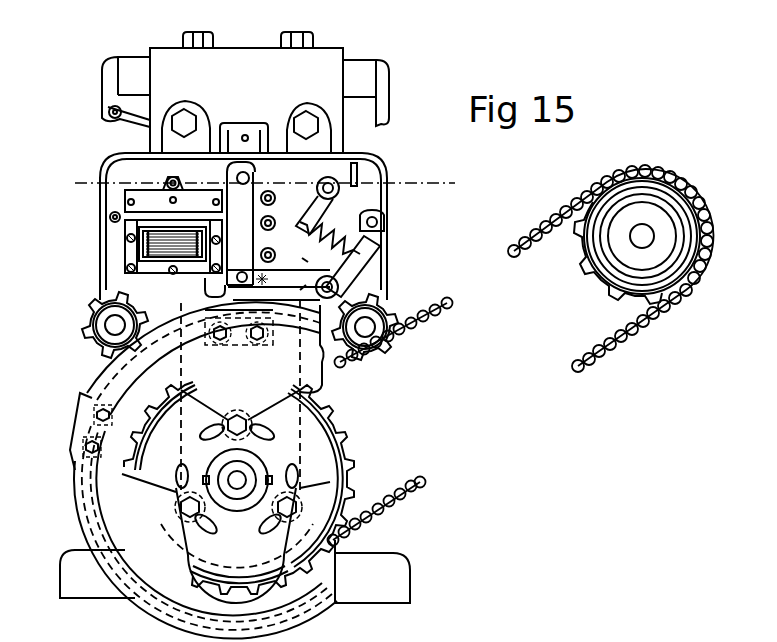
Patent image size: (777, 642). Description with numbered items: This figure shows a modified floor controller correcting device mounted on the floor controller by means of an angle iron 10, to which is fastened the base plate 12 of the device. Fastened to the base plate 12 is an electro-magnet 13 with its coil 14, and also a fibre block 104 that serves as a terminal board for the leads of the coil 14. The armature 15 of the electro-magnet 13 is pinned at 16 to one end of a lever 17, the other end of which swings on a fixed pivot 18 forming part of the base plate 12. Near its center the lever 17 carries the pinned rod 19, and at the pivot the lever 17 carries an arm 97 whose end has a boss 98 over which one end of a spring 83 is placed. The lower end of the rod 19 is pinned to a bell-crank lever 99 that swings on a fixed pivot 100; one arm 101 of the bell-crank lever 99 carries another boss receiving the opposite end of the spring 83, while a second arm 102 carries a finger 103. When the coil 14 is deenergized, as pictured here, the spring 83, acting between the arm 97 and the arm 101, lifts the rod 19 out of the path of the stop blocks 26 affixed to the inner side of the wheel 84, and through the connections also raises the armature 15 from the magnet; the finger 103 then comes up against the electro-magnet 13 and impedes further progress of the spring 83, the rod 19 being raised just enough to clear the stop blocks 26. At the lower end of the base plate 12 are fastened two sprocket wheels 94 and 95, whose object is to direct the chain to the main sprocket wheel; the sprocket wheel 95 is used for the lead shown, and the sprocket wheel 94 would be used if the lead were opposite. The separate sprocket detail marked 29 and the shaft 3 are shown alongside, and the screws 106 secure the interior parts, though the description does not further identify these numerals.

The shaft 3 is at (655, 238).
The angle iron 10 is at (330, 68).
The base plate 12 is at (372, 172).
The electro-magnet 13 is at (130, 258).
The coil 14 is at (140, 243).
The armature 15 is at (122, 206).
The pin 16 is at (165, 180).
The lever 17 is at (340, 186).
The fixed pivot 18 is at (336, 192).
The rod 19 is at (357, 168).
The stop blocks 26 is at (88, 393).
The sprocket 29 is at (590, 266).
The spring 83 is at (306, 258).
The wheel 84 is at (84, 489).
The sprocket wheel 94 is at (100, 324).
The sprocket wheel 95 is at (385, 322).
The arm 97 is at (322, 206).
The boss 98 is at (326, 240).
The bell-crank lever 99 is at (322, 291).
The fixed pivot 100 is at (342, 289).
The arm 101 is at (372, 250).
The arm 102 is at (310, 280).
The finger 103 is at (207, 289).
The fibre block 104 is at (374, 238).
The screws 106 is at (266, 252).